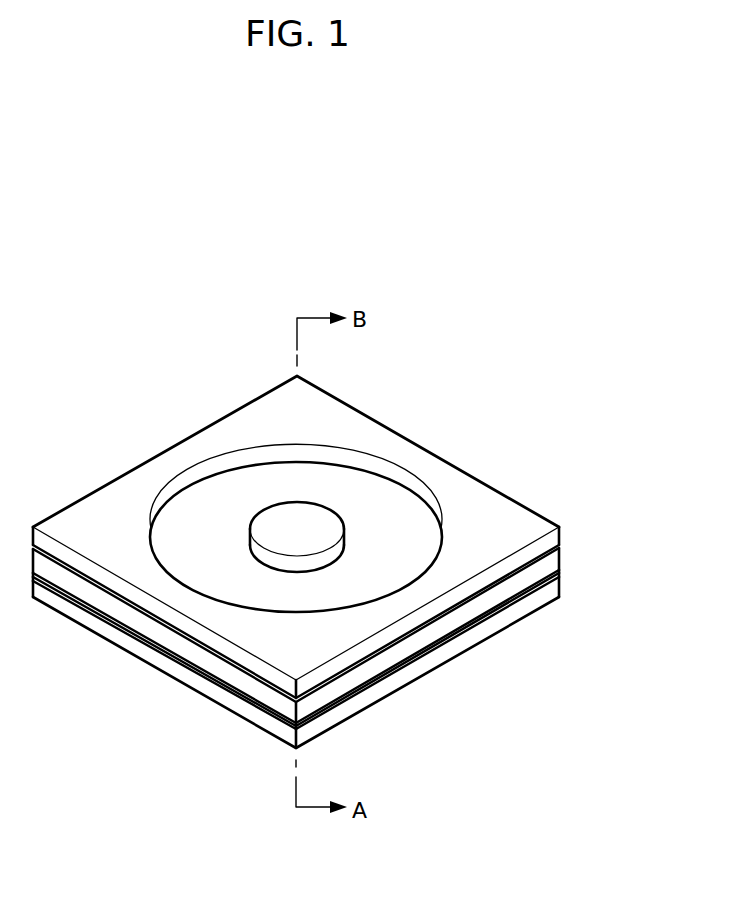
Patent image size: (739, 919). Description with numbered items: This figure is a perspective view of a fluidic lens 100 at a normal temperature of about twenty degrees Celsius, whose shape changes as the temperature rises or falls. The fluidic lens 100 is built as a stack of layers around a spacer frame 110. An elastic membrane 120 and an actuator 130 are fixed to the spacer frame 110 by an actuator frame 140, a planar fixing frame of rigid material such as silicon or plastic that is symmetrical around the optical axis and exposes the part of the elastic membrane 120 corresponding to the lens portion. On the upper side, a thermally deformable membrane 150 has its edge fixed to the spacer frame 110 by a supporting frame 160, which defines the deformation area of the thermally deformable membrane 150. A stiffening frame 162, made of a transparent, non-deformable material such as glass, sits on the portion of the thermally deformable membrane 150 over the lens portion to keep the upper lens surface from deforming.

The fluidic lens 100 is at (128, 427).
The spacer frame 110 is at (553, 566).
The elastic membrane 120 is at (560, 576).
The actuator 130 is at (550, 586).
The actuator frame 140 is at (530, 608).
The thermally deformable membrane 150 is at (565, 538).
The supporting frame 160 is at (373, 421).
The stiffening frame 162 is at (296, 513).